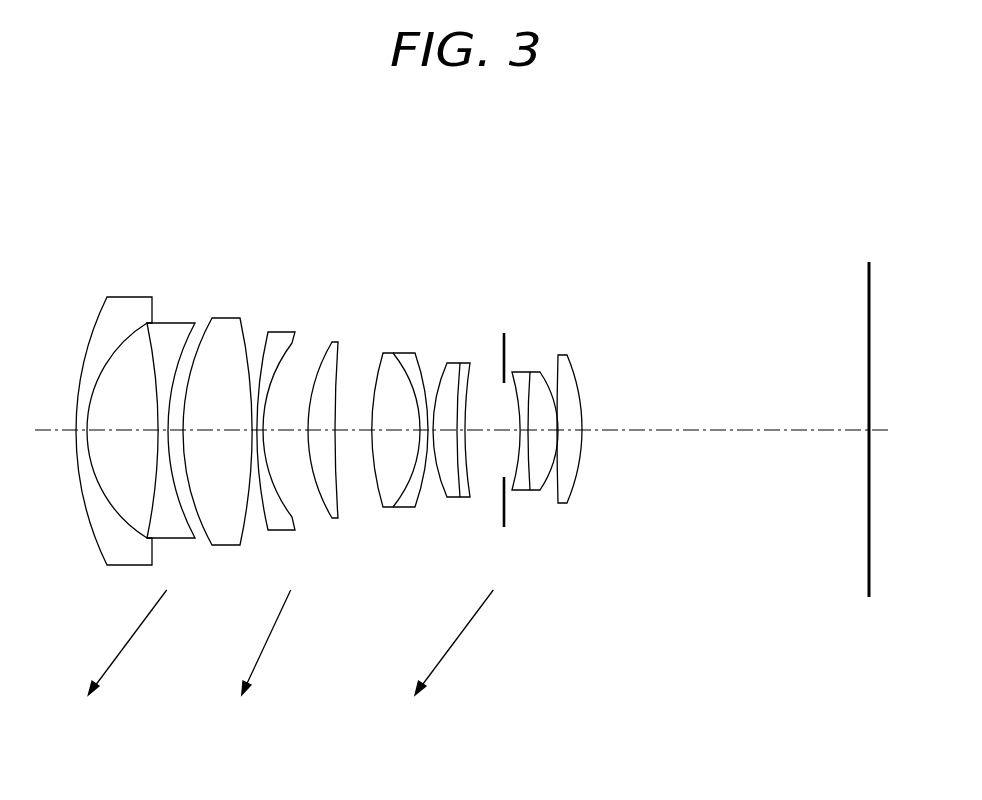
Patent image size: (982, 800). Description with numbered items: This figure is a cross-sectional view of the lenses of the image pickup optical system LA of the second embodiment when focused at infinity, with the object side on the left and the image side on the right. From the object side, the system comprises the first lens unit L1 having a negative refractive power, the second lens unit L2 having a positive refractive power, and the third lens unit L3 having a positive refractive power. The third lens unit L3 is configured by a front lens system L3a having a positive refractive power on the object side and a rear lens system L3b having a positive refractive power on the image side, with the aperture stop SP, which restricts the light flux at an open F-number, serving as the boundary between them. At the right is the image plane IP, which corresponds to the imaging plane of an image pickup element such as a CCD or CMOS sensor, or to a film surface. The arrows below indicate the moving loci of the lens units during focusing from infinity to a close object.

The image pickup optical system LA is at (71, 158).
The first lens unit L1 is at (71, 287).
The second lens unit L2 is at (257, 287).
The third lens unit L3 is at (367, 228).
The 3a-th lens system L3a is at (367, 287).
The 3b-th lens system L3b is at (507, 287).
The aperture stop SP is at (502, 348).
The image plane IP is at (868, 280).